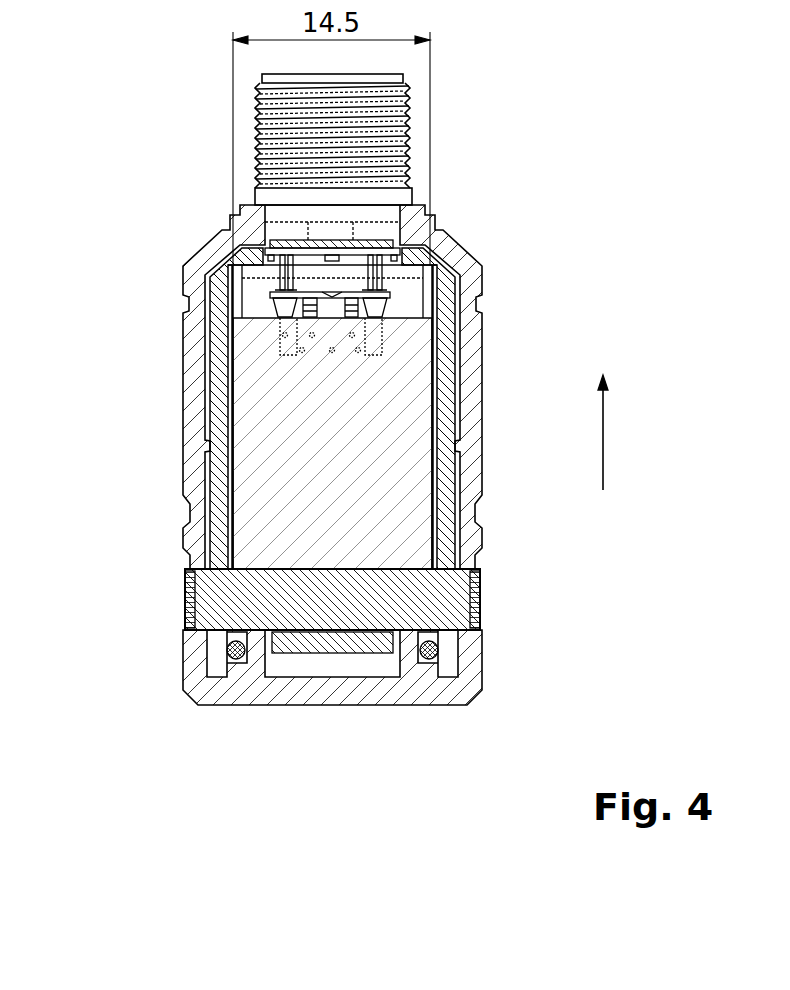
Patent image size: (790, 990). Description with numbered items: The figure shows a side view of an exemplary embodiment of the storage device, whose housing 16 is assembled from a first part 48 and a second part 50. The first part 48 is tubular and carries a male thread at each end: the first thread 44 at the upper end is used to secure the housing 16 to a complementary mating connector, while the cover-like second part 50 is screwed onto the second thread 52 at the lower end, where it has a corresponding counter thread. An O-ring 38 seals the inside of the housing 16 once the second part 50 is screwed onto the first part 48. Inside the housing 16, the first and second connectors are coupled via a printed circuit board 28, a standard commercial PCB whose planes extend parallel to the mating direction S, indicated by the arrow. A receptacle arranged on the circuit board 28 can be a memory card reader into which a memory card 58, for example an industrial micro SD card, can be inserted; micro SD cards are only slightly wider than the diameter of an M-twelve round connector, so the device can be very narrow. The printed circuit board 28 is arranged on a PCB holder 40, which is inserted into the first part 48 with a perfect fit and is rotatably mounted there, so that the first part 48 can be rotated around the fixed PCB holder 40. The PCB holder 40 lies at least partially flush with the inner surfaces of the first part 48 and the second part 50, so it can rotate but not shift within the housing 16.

The housing 16 is at (117, 170).
The printed circuit board 28 is at (400, 415).
The O-ring 38 is at (240, 660).
The PCB holder 40 is at (445, 363).
The first thread 44 is at (410, 142).
The first part 48 is at (190, 388).
The second part 50 is at (192, 670).
The second thread 52 is at (445, 597).
The memory card 58 is at (333, 648).
The mating direction S is at (605, 442).